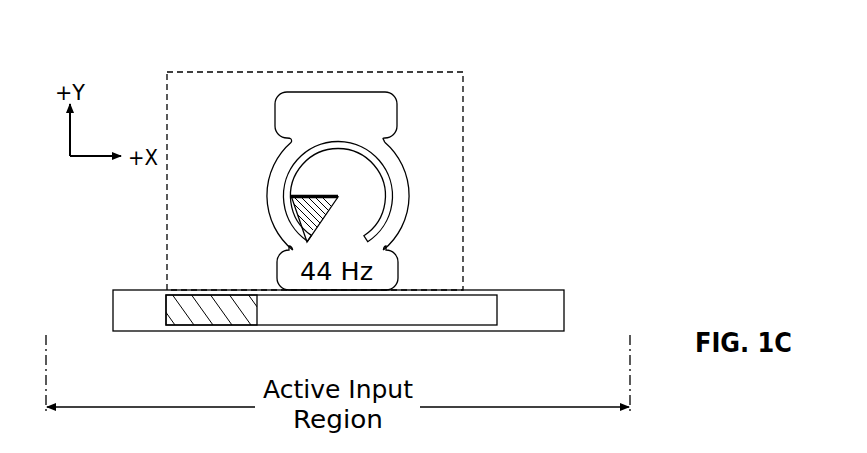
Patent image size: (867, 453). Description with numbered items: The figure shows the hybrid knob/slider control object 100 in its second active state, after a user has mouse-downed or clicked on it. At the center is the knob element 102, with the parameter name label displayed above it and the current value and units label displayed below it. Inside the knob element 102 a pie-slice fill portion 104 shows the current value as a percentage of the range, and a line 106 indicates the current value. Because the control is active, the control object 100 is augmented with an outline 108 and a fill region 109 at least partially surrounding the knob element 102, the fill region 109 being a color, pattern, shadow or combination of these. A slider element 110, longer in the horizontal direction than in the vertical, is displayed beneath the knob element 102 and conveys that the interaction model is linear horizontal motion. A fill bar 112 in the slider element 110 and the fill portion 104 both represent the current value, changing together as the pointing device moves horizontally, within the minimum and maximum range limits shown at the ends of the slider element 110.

The control object 100 is at (232, 72).
The knob element 102 is at (393, 182).
The fill portion 104 is at (310, 210).
The line 106 is at (297, 193).
The outline 108 is at (370, 92).
The fill region 109 is at (328, 100).
The slider element 110 is at (502, 290).
The fill bar 112 is at (212, 316).